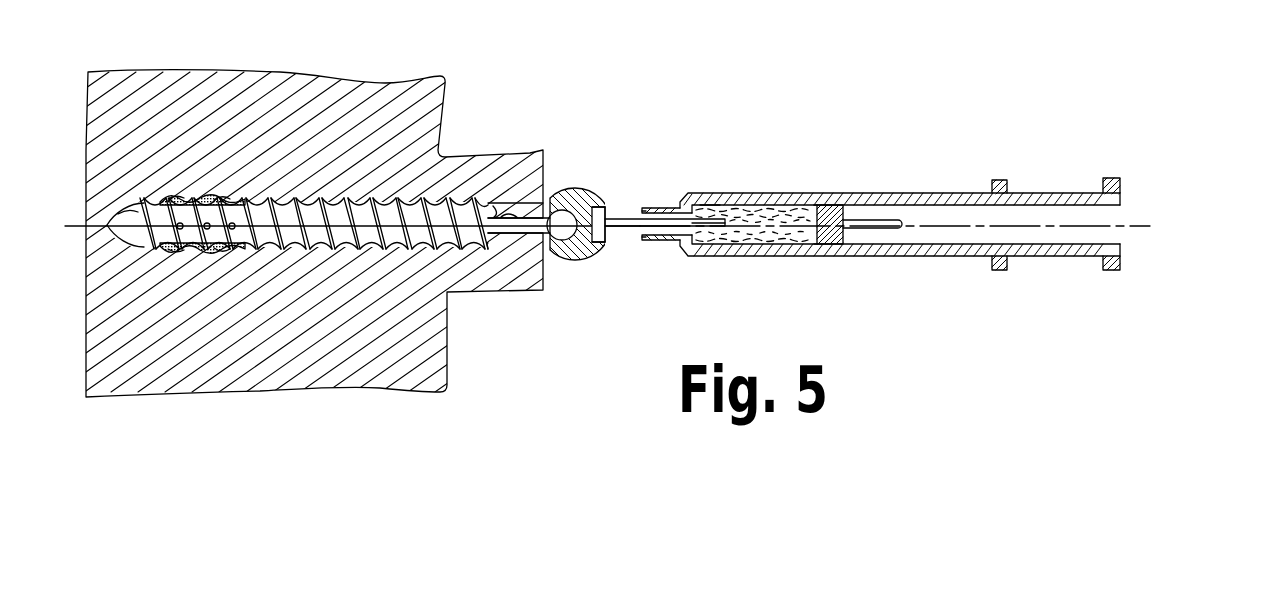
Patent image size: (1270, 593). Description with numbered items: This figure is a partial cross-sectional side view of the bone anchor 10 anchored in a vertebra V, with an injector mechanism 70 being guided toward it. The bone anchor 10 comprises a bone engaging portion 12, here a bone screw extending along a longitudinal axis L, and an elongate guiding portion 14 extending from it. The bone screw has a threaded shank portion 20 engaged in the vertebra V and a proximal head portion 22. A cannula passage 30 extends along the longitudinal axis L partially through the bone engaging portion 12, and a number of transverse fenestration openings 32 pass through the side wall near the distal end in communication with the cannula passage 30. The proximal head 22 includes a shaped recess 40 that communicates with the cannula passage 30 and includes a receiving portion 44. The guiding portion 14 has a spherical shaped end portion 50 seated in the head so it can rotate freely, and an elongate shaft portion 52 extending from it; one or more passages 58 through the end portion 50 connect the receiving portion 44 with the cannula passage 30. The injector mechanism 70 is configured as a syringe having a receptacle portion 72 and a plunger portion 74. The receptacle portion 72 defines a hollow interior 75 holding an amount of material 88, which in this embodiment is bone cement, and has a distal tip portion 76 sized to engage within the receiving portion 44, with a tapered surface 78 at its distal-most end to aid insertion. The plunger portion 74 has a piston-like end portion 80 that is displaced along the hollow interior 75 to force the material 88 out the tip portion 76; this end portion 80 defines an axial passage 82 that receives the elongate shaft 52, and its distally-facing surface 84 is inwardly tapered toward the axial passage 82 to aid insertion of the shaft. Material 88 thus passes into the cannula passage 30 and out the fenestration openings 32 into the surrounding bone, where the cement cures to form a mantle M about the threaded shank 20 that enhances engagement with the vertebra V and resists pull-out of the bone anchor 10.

The bone anchor 10 is at (592, 100).
The bone engaging portion 12 is at (558, 163).
The elongate guiding portion 14 is at (625, 199).
The threaded shank portion 20 is at (279, 176).
The proximal head portion 22 is at (588, 280).
The cannula passage 30 is at (511, 203).
The fenestration openings 32 is at (212, 250).
The shaped recess 40 is at (608, 203).
The receiving portion 44 is at (590, 242).
The shaped end portion 50 is at (597, 206).
The elongate shaft portion 52 is at (698, 220).
The passages 58 is at (557, 260).
The injector mechanism 70 is at (915, 110).
The receptacle portion 72 is at (808, 185).
The plunger portion 74 is at (1064, 190).
The hollow interior 75 is at (720, 200).
The distal tip portion 76 is at (665, 254).
The tapered surface 78 is at (641, 212).
The end portion 80 is at (841, 195).
The axial passage 82 is at (866, 227).
The distally-facing surface 84 is at (804, 210).
The material 88 is at (222, 247).
The mantle M is at (196, 184).
The vertebra V is at (425, 352).
The longitudinal axis L is at (1137, 225).